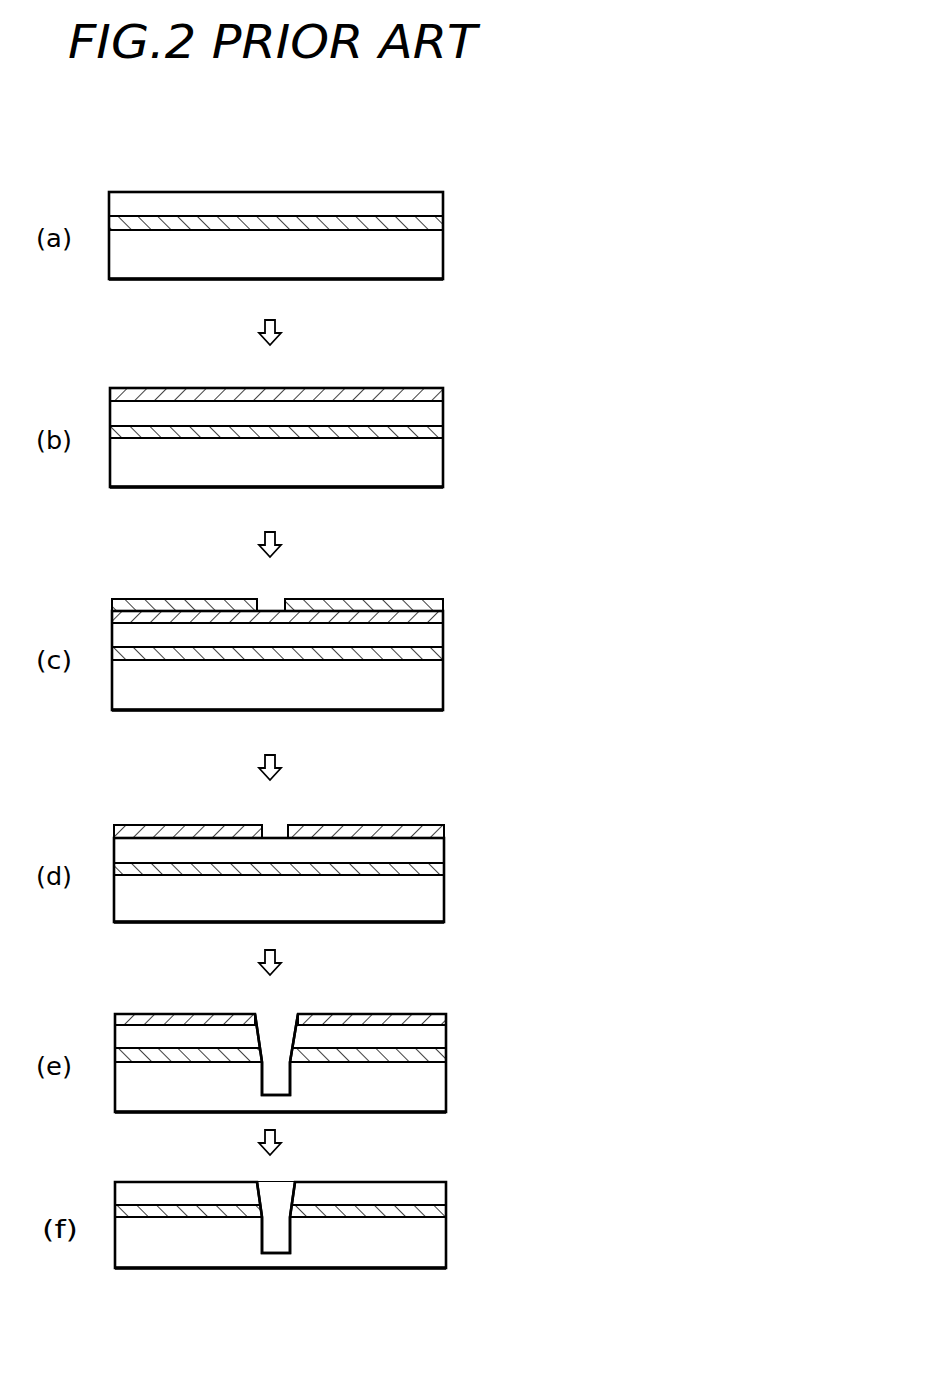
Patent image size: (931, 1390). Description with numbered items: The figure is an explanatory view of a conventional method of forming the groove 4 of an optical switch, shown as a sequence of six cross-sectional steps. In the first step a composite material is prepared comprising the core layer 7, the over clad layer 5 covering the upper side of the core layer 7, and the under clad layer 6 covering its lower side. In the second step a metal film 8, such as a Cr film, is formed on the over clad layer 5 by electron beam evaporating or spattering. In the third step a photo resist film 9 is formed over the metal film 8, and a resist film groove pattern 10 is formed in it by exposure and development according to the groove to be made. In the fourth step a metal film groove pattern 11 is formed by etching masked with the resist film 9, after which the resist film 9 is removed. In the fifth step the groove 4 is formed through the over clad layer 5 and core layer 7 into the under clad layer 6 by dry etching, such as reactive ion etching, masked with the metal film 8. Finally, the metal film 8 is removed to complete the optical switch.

The groove 4 is at (272, 1210).
The over clad layer 5 is at (505, 1190).
The under clad layer 6 is at (443, 252).
The core layer 7 is at (505, 1225).
The metal film 8 is at (406, 1014).
The photo resist film 9 is at (350, 600).
The resist film groove pattern 10 is at (273, 600).
The metal film groove pattern 11 is at (275, 828).